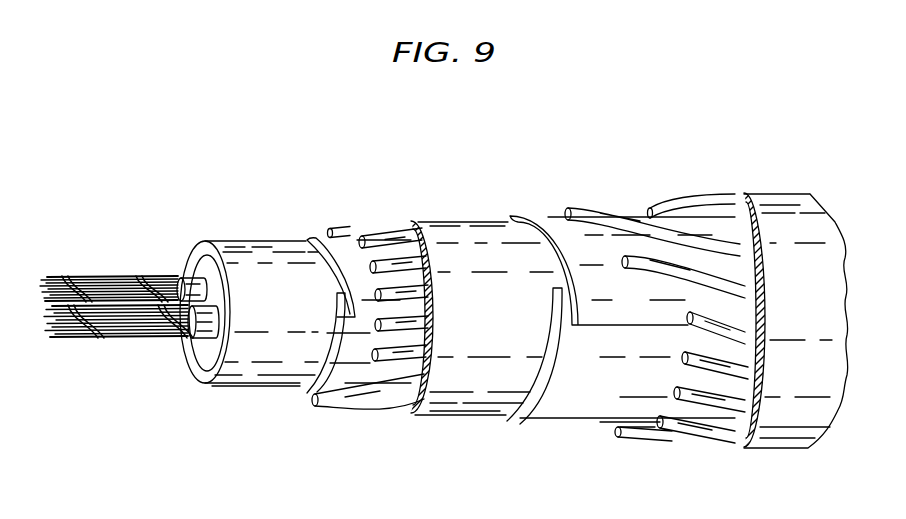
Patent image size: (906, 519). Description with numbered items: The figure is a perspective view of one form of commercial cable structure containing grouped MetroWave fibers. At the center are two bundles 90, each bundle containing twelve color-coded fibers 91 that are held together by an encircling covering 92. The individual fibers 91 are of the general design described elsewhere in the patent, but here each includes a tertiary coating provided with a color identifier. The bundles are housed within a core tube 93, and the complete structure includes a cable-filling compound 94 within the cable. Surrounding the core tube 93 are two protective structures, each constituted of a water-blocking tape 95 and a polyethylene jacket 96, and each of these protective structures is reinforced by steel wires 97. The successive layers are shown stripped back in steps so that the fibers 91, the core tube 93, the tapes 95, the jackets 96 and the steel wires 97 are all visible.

The bundle 90 is at (65, 277).
The color-coded fibers 91 is at (40, 300).
The encircling covering 92 is at (193, 307).
The core tube 93 is at (248, 255).
The cable-filling compound 94 is at (197, 360).
The water-blocking tape 95 is at (348, 236).
The polyethylene jacket 96 is at (461, 234).
The steel wires 97 is at (620, 202).